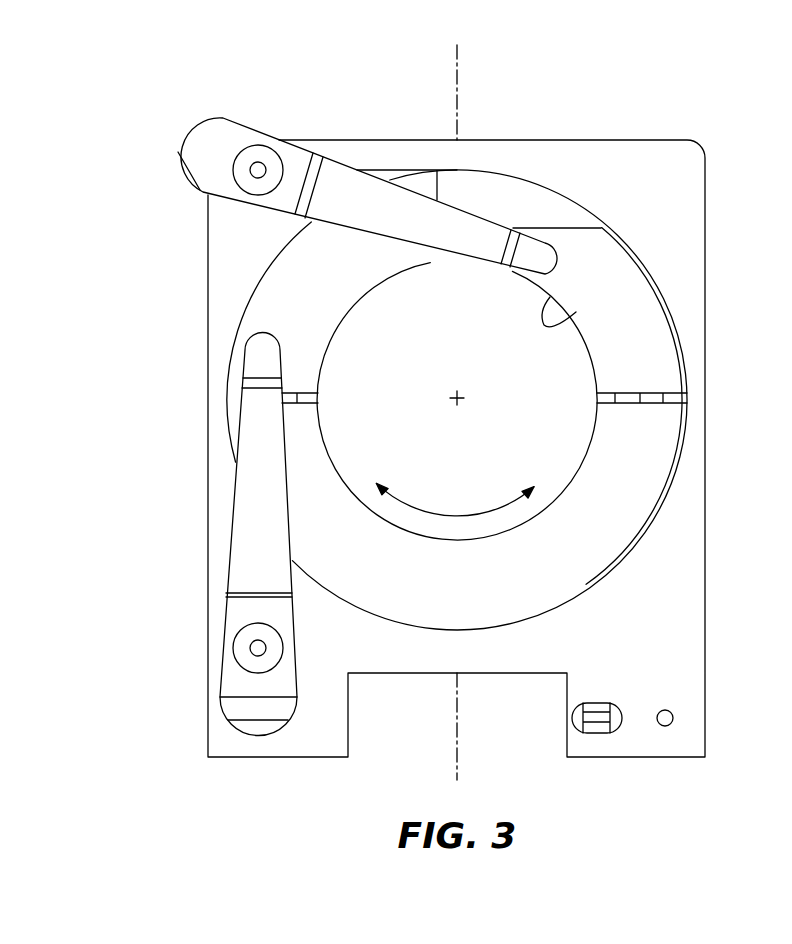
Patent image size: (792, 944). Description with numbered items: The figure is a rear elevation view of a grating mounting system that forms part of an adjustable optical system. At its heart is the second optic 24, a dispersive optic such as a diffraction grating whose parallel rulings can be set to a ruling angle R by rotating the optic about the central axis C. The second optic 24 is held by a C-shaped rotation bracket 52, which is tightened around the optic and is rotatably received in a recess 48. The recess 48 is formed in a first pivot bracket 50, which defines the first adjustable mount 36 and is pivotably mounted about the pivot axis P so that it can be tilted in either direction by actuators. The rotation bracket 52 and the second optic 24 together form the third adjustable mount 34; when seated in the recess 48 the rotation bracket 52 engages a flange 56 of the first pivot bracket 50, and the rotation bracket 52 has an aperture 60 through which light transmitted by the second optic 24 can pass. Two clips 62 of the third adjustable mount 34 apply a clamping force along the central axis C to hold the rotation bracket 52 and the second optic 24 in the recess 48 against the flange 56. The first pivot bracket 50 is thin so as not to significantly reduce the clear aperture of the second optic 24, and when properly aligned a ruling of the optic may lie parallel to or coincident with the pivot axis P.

The second optic 24 is at (533, 362).
The third adjustable mount 34 is at (671, 525).
The first adjustable mount 36 is at (718, 583).
The recess 48 is at (527, 199).
The first pivot bracket 50 is at (673, 664).
The rotation bracket 52 is at (647, 362).
The flange 56 is at (482, 197).
The aperture 60 is at (545, 325).
The clips 62 is at (344, 197).
The pivot axis P is at (458, 93).
The central axis C is at (462, 395).
The ruling angle R is at (440, 515).